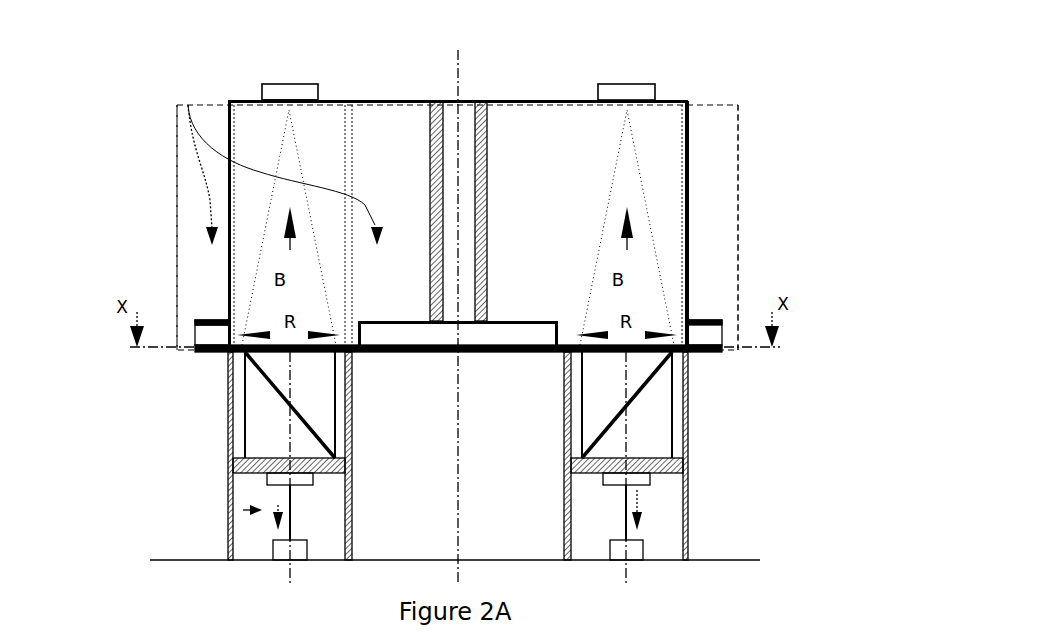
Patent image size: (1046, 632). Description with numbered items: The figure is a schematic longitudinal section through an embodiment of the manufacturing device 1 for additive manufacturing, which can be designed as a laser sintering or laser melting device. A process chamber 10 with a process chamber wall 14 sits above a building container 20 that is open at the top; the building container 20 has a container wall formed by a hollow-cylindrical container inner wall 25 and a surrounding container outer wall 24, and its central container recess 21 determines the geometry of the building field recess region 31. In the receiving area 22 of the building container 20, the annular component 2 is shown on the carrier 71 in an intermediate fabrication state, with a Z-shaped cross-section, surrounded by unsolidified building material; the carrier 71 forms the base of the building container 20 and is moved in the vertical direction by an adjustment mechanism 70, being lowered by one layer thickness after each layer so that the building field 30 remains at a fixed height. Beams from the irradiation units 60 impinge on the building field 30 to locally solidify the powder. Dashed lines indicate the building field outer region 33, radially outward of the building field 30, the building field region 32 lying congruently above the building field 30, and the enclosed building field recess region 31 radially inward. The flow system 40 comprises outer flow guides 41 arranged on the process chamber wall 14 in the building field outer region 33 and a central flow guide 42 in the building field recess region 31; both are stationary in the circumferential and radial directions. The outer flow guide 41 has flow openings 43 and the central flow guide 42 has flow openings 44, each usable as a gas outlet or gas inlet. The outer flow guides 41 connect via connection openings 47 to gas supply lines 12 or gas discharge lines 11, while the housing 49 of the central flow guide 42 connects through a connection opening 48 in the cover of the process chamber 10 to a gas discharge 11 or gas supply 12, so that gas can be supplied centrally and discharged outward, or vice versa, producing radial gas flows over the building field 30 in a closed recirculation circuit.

The manufacturing device 1 is at (110, 58).
The component 2 is at (430, 479).
The process chamber 10 is at (684, 100).
The gas discharge 11 is at (194, 331).
The gas supply 12 is at (450, 94).
The process chamber wall 14 is at (688, 160).
The building container 20 is at (215, 505).
The container recess 21 is at (422, 447).
The receiving area 22 is at (458, 405).
The container outer wall 24 is at (228, 550).
The container inner wall 25 is at (352, 533).
The building field 30 is at (228, 352).
The building field recess region 31 is at (528, 100).
The building field region 32 is at (322, 105).
The building field outer region 33 is at (177, 255).
The flow system 40 is at (188, 105).
The outer flow guide 41 is at (212, 320).
The central flow guide 42 is at (376, 227).
The flow openings 43 is at (238, 334).
The flow openings 44 is at (356, 325).
The connection openings 47 is at (732, 330).
The connection opening 48 is at (467, 100).
The housing 49 is at (488, 108).
The irradiation units 60 is at (270, 98).
The adjustment mechanism 70 is at (230, 510).
The carrier 71 is at (245, 465).